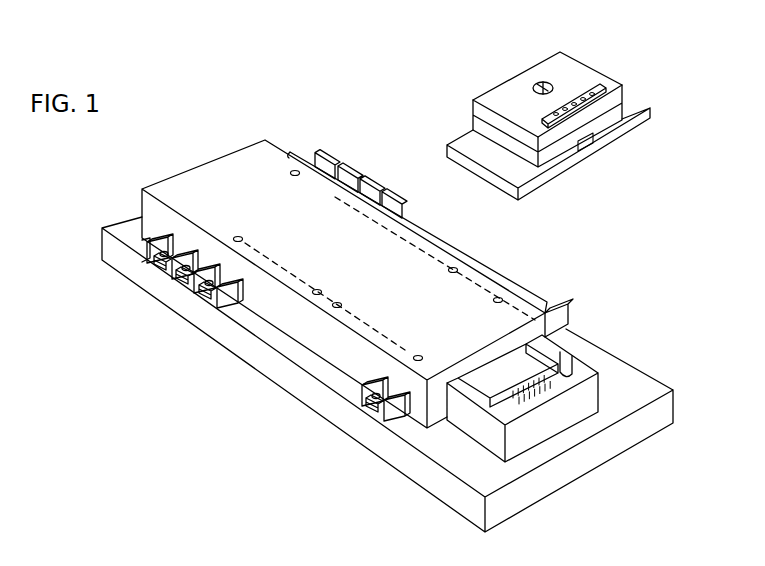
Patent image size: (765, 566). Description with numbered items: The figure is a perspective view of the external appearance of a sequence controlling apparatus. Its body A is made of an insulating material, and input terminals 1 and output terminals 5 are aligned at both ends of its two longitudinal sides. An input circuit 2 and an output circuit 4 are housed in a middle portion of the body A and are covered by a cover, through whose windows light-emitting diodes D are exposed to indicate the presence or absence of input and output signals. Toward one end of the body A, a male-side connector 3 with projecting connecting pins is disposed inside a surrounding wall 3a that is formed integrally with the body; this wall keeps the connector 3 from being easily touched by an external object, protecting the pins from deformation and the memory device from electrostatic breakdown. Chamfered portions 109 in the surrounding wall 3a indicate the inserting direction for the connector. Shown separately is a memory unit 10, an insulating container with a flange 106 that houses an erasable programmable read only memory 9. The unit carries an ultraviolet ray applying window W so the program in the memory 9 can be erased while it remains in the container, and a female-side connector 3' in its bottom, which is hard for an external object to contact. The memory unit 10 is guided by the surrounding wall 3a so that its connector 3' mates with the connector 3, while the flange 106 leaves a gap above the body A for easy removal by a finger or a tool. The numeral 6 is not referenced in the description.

The body A is at (439, 488).
The input circuit 2 is at (182, 190).
The light-emitting diodes D is at (239, 236).
The output circuit 4 is at (266, 165).
The output terminals 5 is at (340, 170).
The input terminals 1 is at (203, 292).
The connector bodies 6 is at (162, 270).
The connector 3 is at (538, 414).
The surrounding wall 3a is at (532, 432).
The chamfered portions 109 is at (565, 376).
The flange 106 is at (638, 106).
The memory unit 10 is at (487, 97).
The erasable programmable read only memory 9 is at (580, 68).
The ultraviolet ray applying window W is at (540, 83).
The connector 3' is at (596, 83).